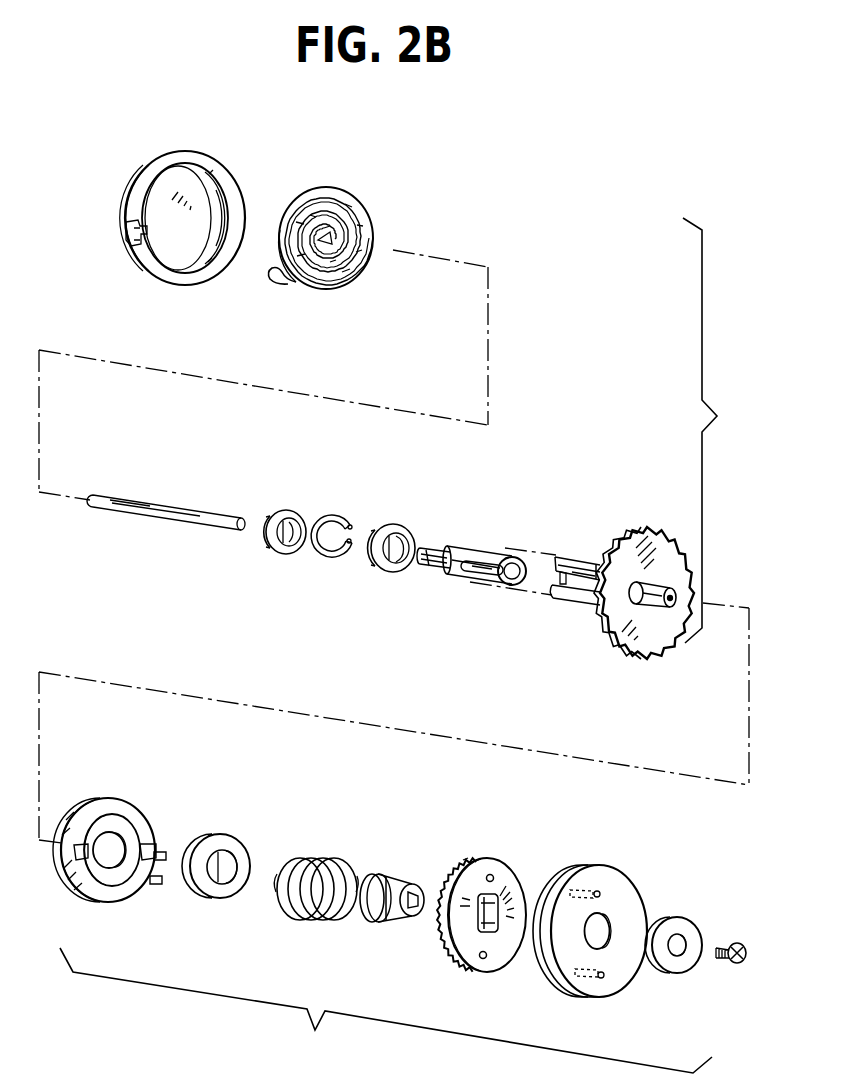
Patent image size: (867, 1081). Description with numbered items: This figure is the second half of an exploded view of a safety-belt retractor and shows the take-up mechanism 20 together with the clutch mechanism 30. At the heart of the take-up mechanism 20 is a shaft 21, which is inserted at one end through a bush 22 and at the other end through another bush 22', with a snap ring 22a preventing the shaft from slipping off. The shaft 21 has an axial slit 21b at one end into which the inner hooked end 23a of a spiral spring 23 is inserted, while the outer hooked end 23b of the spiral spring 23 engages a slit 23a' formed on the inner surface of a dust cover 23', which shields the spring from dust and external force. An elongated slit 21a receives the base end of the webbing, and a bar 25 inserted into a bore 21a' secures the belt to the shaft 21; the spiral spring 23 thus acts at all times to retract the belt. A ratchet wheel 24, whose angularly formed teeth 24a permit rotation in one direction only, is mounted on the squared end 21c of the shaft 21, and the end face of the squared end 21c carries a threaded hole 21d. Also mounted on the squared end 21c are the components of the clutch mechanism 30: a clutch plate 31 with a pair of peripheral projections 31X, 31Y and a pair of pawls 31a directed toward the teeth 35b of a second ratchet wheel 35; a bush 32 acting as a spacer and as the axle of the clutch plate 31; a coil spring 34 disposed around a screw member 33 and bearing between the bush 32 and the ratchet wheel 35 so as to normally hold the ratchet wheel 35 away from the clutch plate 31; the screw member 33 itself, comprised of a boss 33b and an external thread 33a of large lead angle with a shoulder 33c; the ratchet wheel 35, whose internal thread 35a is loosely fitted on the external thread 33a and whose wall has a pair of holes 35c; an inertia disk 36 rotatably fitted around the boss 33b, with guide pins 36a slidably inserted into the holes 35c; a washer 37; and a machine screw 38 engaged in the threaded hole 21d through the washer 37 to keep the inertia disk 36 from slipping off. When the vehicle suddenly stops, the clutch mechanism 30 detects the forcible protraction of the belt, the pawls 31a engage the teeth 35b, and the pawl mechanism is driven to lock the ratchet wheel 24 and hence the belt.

The take-up mechanism 20 is at (748, 431).
The shaft 21 is at (488, 548).
The elongated slit 21a is at (564, 607).
The bore 21a' is at (511, 543).
The slit 21b is at (421, 565).
The squared end 21c is at (657, 585).
The threaded hole 21d is at (675, 597).
The bush 22 is at (284, 509).
The snap ring 22a is at (334, 518).
The bush 22' is at (397, 528).
The spiral spring 23 is at (326, 217).
The inner hooked end 23a is at (368, 212).
The slit 23a' is at (106, 246).
The outer hooked end 23b is at (272, 282).
The dust cover 23' is at (182, 198).
The ratchet wheel 24 is at (650, 640).
The teeth 24a is at (612, 640).
The bar 25 is at (150, 497).
The clutch mechanism 30 is at (328, 1058).
The clutch plate 31 is at (100, 800).
The pawls 31a is at (156, 846).
The projection 31X is at (168, 856).
The projection 31Y is at (162, 884).
The bush 32 is at (228, 848).
The screw member 33 is at (386, 932).
The external thread 33a is at (372, 890).
The boss 33b is at (411, 918).
The shoulder 33c is at (414, 884).
The coil spring 34 is at (315, 856).
The ratchet wheel 35 is at (455, 962).
The internal thread 35a is at (500, 925).
The teeth 35b is at (443, 872).
The holes 35c is at (492, 875).
The inertia disk 36 is at (628, 900).
The guide pins 36a is at (585, 889).
The washer 37 is at (690, 920).
The machine screw 38 is at (731, 945).